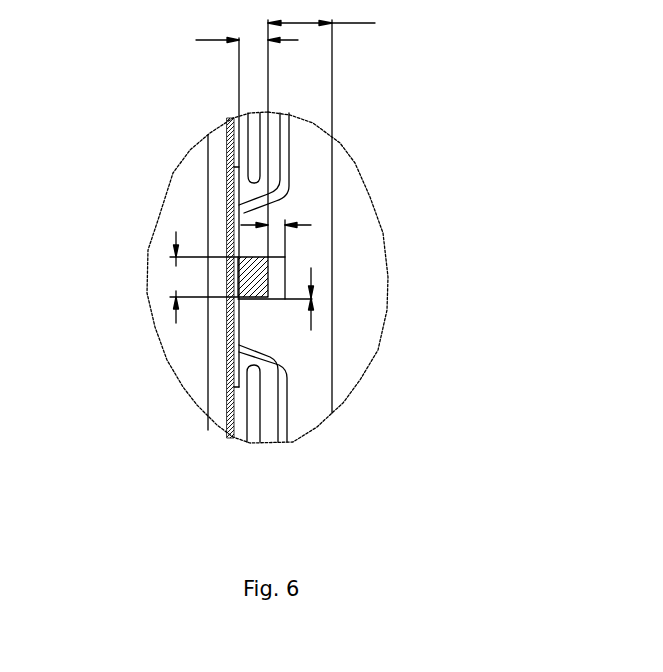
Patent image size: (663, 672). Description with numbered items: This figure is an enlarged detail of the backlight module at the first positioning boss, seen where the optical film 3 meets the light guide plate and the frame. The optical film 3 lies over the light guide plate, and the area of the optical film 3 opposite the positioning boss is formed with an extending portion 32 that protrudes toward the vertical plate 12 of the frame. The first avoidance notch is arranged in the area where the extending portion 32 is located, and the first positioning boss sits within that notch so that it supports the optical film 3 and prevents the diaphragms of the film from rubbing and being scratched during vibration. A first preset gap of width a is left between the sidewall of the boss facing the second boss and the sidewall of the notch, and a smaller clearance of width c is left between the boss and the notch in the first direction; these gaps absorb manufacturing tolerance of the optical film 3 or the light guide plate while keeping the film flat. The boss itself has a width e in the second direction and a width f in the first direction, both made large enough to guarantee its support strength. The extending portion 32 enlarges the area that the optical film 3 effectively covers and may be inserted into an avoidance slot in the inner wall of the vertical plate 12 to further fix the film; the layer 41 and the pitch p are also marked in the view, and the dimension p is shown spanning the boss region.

The optical film 3 is at (305, 187).
The vertical plate 12 is at (216, 421).
The extending portion 32 is at (258, 217).
The insulating layer 41 is at (228, 380).
The width of the first preset gap a is at (282, 225).
The width of the gap in the first direction c is at (311, 329).
The width of the first positioning boss in the second direction e is at (239, 40).
The width of the first positioning boss in the first direction f is at (204, 277).
The dimension p is at (328, 24).